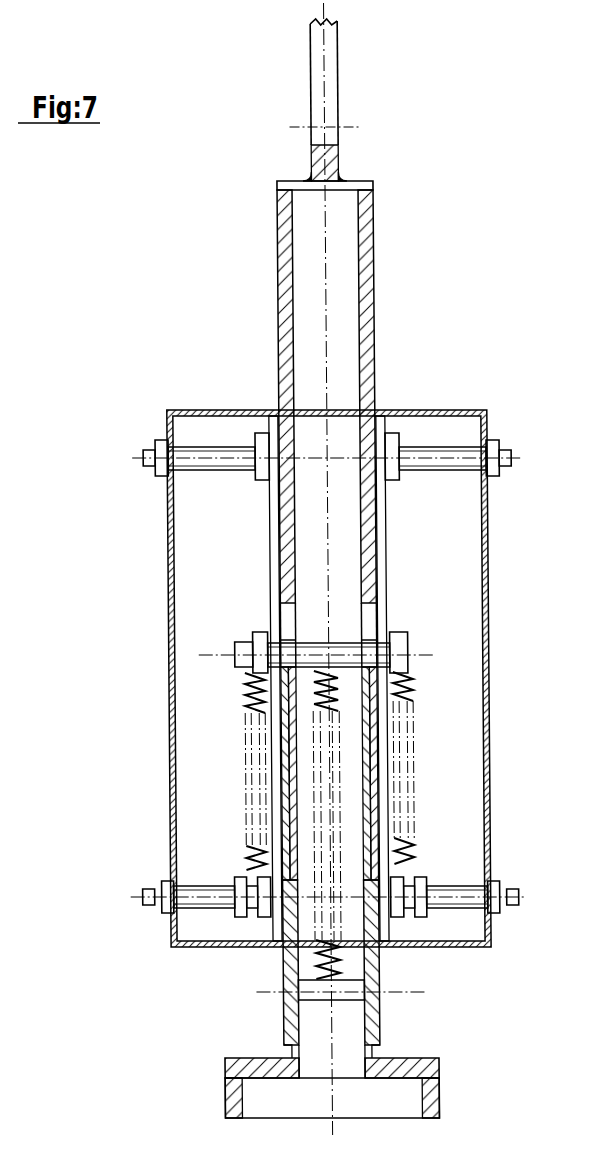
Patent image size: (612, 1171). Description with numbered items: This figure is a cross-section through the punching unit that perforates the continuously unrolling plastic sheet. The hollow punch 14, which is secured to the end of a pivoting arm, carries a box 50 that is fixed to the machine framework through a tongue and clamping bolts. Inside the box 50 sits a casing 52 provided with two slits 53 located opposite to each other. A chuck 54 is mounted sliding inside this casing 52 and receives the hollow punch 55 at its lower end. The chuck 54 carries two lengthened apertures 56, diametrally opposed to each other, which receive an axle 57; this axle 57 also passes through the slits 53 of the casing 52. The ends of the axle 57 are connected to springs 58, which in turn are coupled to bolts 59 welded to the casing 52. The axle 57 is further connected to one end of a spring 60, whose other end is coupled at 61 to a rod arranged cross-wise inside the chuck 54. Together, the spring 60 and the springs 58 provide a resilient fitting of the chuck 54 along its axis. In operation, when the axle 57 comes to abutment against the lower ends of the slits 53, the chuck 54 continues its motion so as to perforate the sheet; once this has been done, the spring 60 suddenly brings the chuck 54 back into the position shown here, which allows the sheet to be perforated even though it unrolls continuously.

The hollow punch 14 is at (488, 548).
The box 50 is at (490, 662).
The casing 52 is at (272, 727).
The slits 53 is at (382, 507).
The chuck 54 is at (367, 293).
The hollow punch 55 is at (435, 1062).
The lengthened apertures 56 is at (372, 620).
The axle 57 is at (266, 636).
The springs 58 is at (247, 848).
The bolts 59 is at (227, 903).
The spring 60 is at (337, 951).
The coupling point 61 is at (336, 988).